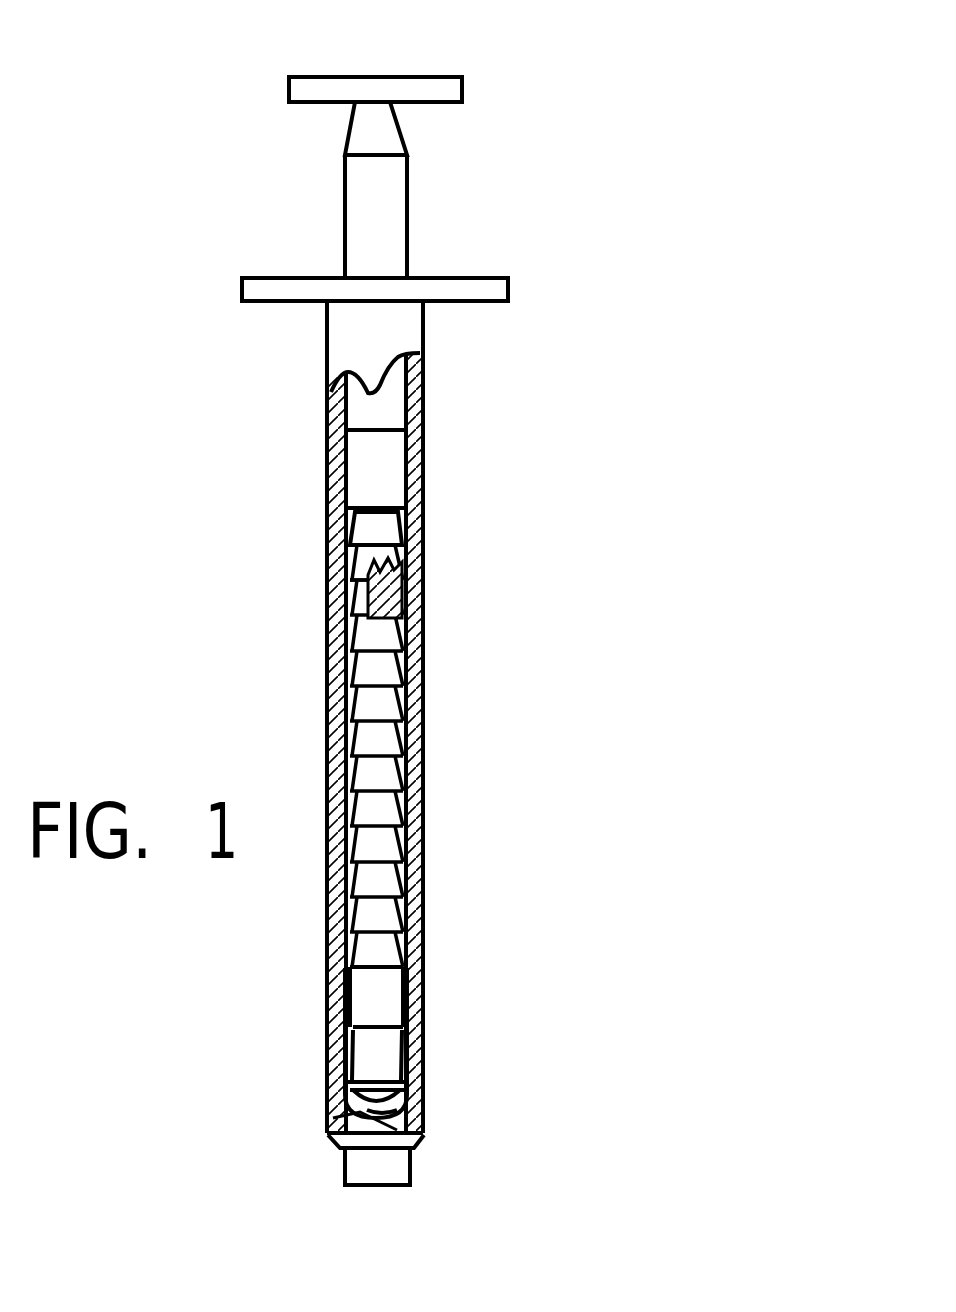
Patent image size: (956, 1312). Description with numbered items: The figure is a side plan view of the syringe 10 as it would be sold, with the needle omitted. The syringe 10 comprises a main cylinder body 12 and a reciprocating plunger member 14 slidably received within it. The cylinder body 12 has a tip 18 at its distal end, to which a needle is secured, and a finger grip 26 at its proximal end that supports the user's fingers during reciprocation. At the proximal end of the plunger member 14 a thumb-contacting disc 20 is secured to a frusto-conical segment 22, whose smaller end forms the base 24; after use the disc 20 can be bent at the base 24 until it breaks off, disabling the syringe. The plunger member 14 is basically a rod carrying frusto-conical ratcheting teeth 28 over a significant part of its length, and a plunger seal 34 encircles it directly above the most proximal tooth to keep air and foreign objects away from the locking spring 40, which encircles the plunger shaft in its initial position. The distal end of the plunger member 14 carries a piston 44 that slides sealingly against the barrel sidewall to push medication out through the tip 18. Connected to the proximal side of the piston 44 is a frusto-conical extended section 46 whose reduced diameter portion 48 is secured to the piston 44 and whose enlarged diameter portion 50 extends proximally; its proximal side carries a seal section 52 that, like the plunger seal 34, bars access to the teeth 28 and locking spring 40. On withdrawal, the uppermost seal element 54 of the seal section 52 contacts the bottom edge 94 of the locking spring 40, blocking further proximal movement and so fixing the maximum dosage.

The syringe 10 is at (622, 640).
The main cylinder body 12 is at (440, 837).
The reciprocating plunger member 14 is at (400, 197).
The tip 18 is at (400, 1168).
The thumb-contacting disc 20 is at (457, 90).
The frusto-conical segment 22 is at (382, 130).
The base 24 is at (358, 103).
The finger grip 26 is at (487, 288).
The frusto-conical ratcheting teeth 28 is at (392, 747).
The plunger seal 34 is at (387, 457).
The locking spring 40 is at (355, 593).
The piston 44 is at (427, 1102).
The frusto-conical extended section 46 is at (430, 1067).
The reduced diameter portion 48 is at (345, 1093).
The enlarged diameter portion 50 is at (427, 1033).
The seal section 52 is at (368, 998).
The uppermost seal element 54 is at (425, 957).
The bottom edge 94 is at (400, 633).